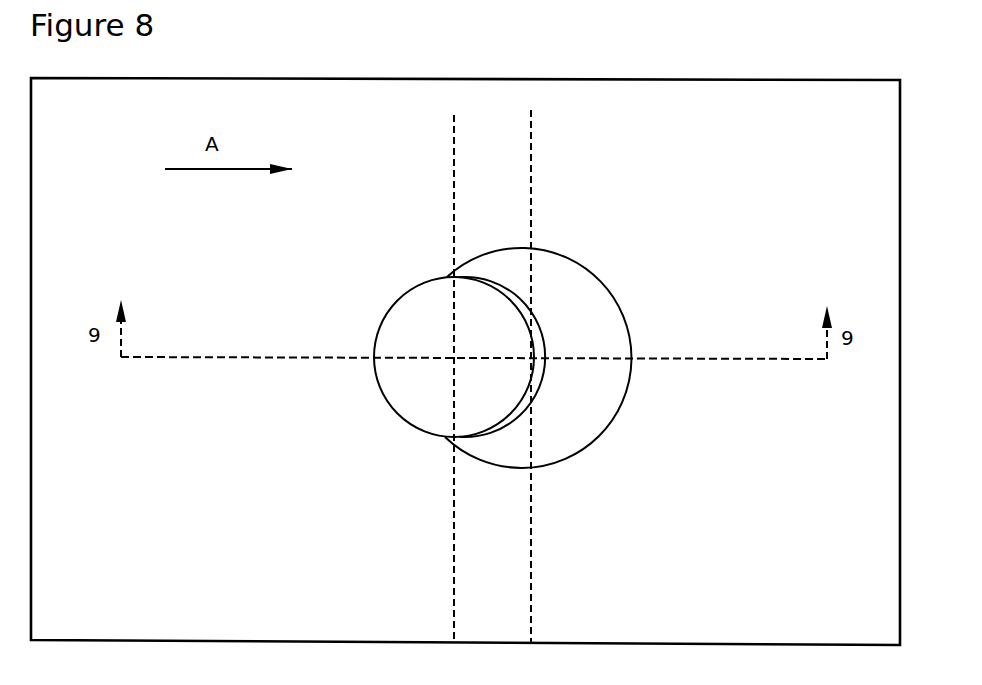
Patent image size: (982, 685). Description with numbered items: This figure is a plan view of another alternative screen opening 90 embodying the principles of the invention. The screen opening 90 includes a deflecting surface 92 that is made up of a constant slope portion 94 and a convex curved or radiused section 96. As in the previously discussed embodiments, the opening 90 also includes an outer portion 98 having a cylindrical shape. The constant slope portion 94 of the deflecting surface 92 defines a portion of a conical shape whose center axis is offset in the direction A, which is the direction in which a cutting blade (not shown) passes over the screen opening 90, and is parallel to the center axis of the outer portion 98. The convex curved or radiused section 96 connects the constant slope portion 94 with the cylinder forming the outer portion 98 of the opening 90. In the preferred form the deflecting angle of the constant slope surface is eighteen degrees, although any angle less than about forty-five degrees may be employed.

The screen opening 90 is at (432, 202).
The deflecting surface 92 is at (595, 307).
The constant slope portion 94 is at (582, 422).
The convex curved or radiused section 96 is at (510, 417).
The outer portion 98 is at (595, 307).